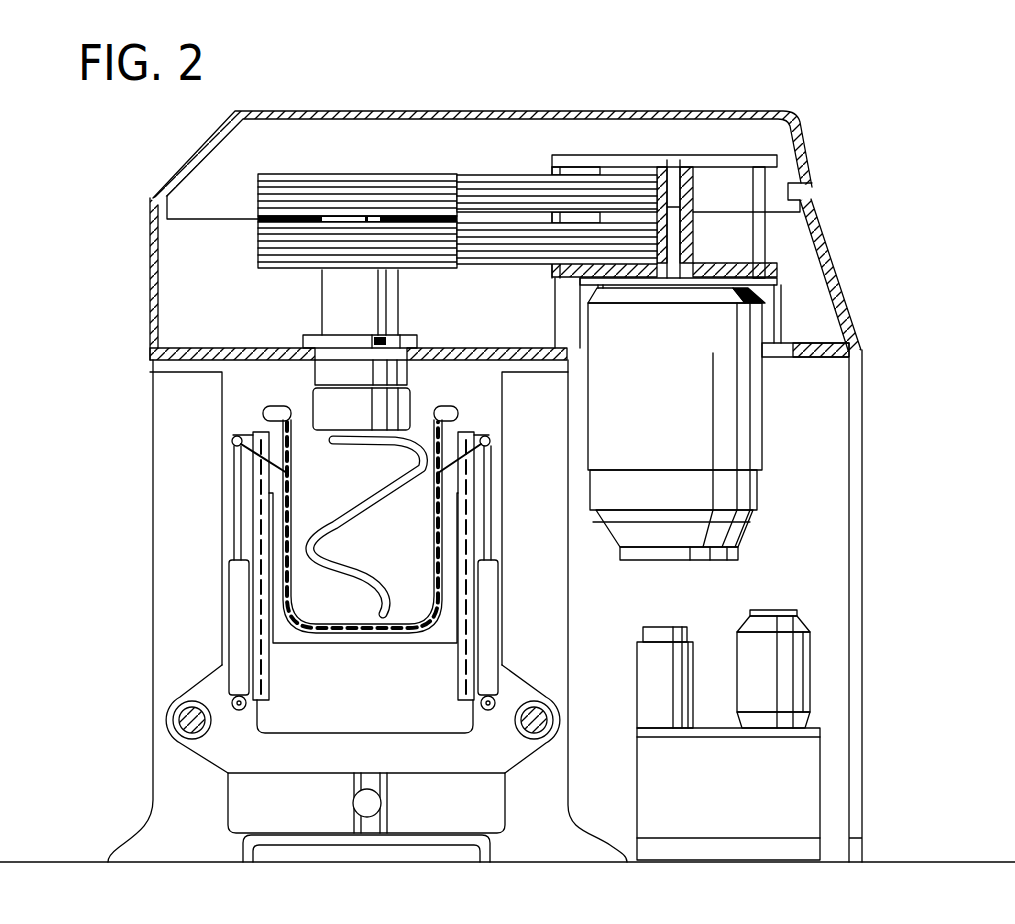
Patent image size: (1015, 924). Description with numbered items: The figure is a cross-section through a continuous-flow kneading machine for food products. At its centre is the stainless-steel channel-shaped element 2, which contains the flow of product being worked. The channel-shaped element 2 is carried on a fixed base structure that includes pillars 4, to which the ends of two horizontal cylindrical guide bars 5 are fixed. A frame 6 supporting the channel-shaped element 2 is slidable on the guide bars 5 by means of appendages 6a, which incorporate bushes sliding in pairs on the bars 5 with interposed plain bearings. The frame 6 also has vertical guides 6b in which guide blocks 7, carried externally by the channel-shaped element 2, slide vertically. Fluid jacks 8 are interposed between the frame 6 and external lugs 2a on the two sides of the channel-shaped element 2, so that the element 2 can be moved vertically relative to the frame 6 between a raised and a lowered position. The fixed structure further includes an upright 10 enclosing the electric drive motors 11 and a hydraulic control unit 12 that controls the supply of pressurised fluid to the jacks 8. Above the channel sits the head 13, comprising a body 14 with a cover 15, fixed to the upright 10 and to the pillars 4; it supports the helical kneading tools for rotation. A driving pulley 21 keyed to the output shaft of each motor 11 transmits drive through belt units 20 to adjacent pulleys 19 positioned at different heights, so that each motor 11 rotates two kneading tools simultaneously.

The channel-shaped element 2 is at (337, 620).
The external lugs 2a is at (250, 440).
The pillars 4 is at (170, 456).
The cylindrical guide bars 5 is at (180, 723).
The frame 6 is at (307, 760).
The appendages 6a is at (213, 685).
The vertical guides 6b is at (460, 667).
The guide blocks 7 is at (253, 427).
The fluid jacks 8 is at (228, 560).
The upright 10 is at (864, 474).
The electric drive motors 11 is at (727, 440).
The hydraulic control unit 12 is at (818, 649).
The head 13 is at (735, 109).
The body 14 is at (837, 267).
The cover 15 is at (803, 147).
The pulley 19 is at (273, 243).
The belt units 20 is at (500, 240).
The driving pulley 21 is at (700, 167).